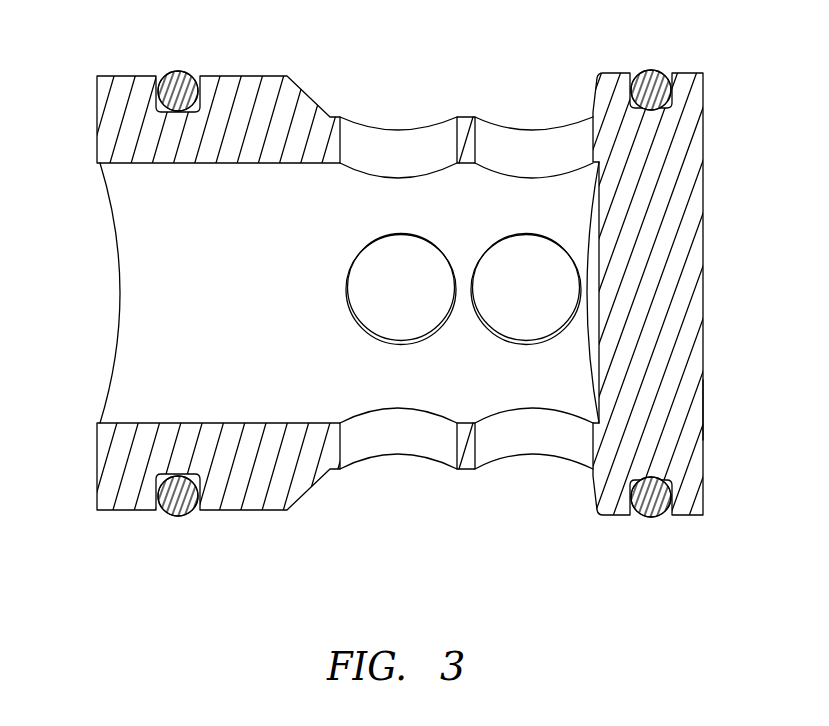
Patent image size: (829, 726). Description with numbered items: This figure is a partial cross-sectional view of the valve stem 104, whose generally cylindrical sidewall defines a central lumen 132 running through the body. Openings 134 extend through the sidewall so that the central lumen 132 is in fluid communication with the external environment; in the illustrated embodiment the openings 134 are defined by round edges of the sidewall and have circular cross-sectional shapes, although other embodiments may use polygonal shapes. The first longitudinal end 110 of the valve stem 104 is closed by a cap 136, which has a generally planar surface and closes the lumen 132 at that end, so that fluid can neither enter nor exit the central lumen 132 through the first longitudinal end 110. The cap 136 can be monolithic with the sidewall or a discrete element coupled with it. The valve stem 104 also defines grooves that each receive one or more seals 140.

The valve stem 104 is at (112, 121).
The first longitudinal end 110 is at (703, 288).
The central lumen 132 is at (174, 288).
The opening 134 is at (406, 143).
The cap 136 is at (687, 392).
The seal 140 is at (177, 76).